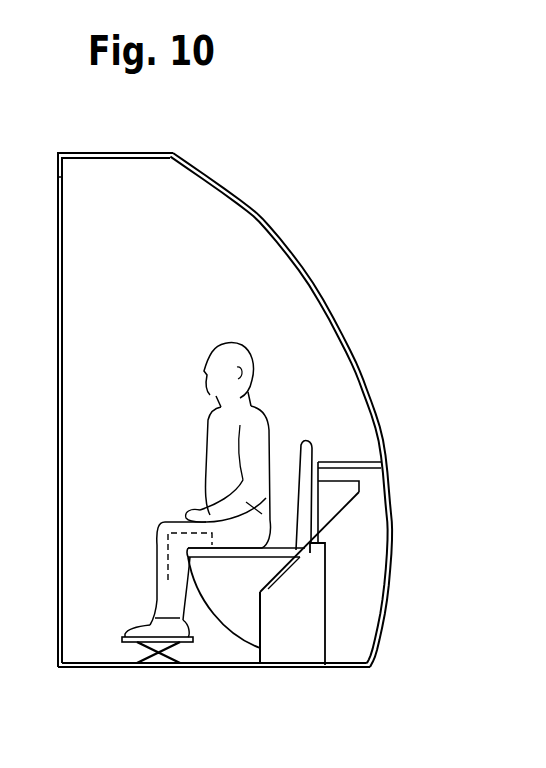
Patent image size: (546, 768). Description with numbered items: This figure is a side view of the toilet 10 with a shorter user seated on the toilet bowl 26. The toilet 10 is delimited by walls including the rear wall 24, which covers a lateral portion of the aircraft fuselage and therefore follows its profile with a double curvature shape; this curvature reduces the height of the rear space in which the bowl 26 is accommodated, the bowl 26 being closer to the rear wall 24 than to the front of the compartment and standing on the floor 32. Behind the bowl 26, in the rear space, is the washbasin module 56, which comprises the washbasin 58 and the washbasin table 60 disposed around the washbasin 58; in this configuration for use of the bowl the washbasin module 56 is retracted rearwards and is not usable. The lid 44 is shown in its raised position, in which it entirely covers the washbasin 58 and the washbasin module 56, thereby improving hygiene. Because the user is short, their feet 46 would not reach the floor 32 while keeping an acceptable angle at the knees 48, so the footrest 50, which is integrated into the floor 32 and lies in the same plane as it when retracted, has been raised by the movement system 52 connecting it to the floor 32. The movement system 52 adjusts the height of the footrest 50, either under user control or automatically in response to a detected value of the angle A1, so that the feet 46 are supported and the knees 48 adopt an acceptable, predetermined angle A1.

The toilet 10 is at (262, 160).
The rear wall 24 is at (270, 228).
The toilet bowl 26 is at (233, 590).
The floor 32 is at (210, 668).
The lid 44 is at (312, 443).
The feet 46 is at (147, 627).
The knees 48 is at (157, 530).
The footrest 50 is at (122, 639).
The movement system 52 is at (157, 668).
The washbasin module 56 is at (352, 512).
The washbasin 58 is at (315, 470).
The washbasin table 60 is at (345, 490).
The angle at the level of the knees A1 is at (165, 560).